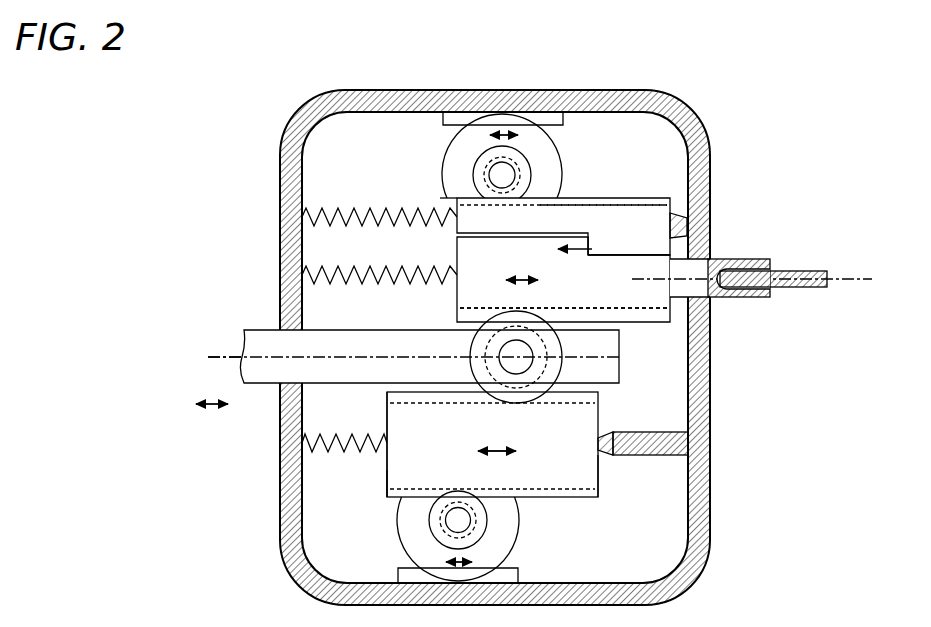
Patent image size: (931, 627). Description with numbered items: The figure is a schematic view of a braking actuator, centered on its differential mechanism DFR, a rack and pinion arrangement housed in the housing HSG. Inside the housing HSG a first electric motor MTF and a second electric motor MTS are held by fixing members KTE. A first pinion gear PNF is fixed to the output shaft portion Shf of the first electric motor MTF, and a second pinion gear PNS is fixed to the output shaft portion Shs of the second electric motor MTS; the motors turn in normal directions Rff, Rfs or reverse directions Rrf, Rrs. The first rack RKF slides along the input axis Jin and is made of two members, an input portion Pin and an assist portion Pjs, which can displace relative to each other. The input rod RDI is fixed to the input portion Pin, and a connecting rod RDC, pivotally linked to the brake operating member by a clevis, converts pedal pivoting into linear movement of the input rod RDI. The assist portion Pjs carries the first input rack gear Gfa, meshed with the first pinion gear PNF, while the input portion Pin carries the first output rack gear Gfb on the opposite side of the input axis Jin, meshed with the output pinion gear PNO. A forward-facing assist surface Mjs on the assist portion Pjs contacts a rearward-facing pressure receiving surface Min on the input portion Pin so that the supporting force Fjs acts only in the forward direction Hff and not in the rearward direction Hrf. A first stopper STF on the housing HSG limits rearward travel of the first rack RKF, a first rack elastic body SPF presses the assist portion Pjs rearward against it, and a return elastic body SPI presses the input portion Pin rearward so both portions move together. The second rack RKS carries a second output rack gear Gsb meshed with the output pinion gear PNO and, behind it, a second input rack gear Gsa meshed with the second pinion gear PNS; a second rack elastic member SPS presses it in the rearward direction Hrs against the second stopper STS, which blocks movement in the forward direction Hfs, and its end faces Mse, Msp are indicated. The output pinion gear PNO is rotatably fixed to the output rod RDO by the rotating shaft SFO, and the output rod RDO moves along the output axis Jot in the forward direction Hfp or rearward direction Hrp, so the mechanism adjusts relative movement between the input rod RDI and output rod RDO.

The housing HSG is at (378, 91).
The differential mechanism DFR is at (256, 231).
The fixing member KTE is at (565, 120).
The first rack elastic body SPF is at (357, 208).
The return elastic body SPI is at (366, 272).
The second rack elastic member SPS is at (333, 434).
The first electric motor MTF is at (446, 166).
The first pinion gear PNF is at (530, 166).
The output shaft portion of the first electric motor Shf is at (508, 176).
The reverse direction of the first electric motor Rrf is at (486, 136).
The normal direction of the first electric motor Rff is at (521, 136).
The first rack RKF is at (438, 197).
The first input rack gear Gfa is at (664, 199).
The assist portion Pjs is at (620, 213).
The input portion Pin is at (458, 252).
The first output rack gear Gfb is at (655, 320).
The assist surface Mjs is at (594, 244).
The pressure receiving surface Min is at (590, 246).
The supporting force Fjs is at (557, 246).
The forward direction Hff is at (504, 280).
The rearward direction Hrf is at (540, 280).
The first stopper STF is at (686, 223).
The input axis Jin is at (838, 279).
The input rod RDI is at (740, 298).
The connecting rod RDC is at (782, 273).
The output axis Jot is at (208, 356).
The output rod RDO is at (254, 329).
The forward direction Hfp is at (190, 406).
The rearward direction Hrp is at (233, 406).
The second output rack gear Gsb is at (387, 401).
The second input rack gear Gsa is at (589, 497).
The second rack RKS is at (388, 473).
The second rack end Mse is at (388, 490).
The second rack stop end Msp is at (598, 468).
The forward direction Hfs is at (475, 453).
The rearward direction Hrs is at (517, 453).
The second stopper STS is at (607, 432).
The output pinion gear PNO is at (484, 344).
The rotating shaft SFO is at (530, 354).
The second electric motor MTS is at (516, 513).
The second pinion gear PNS is at (432, 527).
The output shaft portion of the second electric motor Shs is at (470, 526).
The reverse direction of the second electric motor Rrs is at (440, 558).
The normal direction of the second electric motor Rfs is at (478, 558).